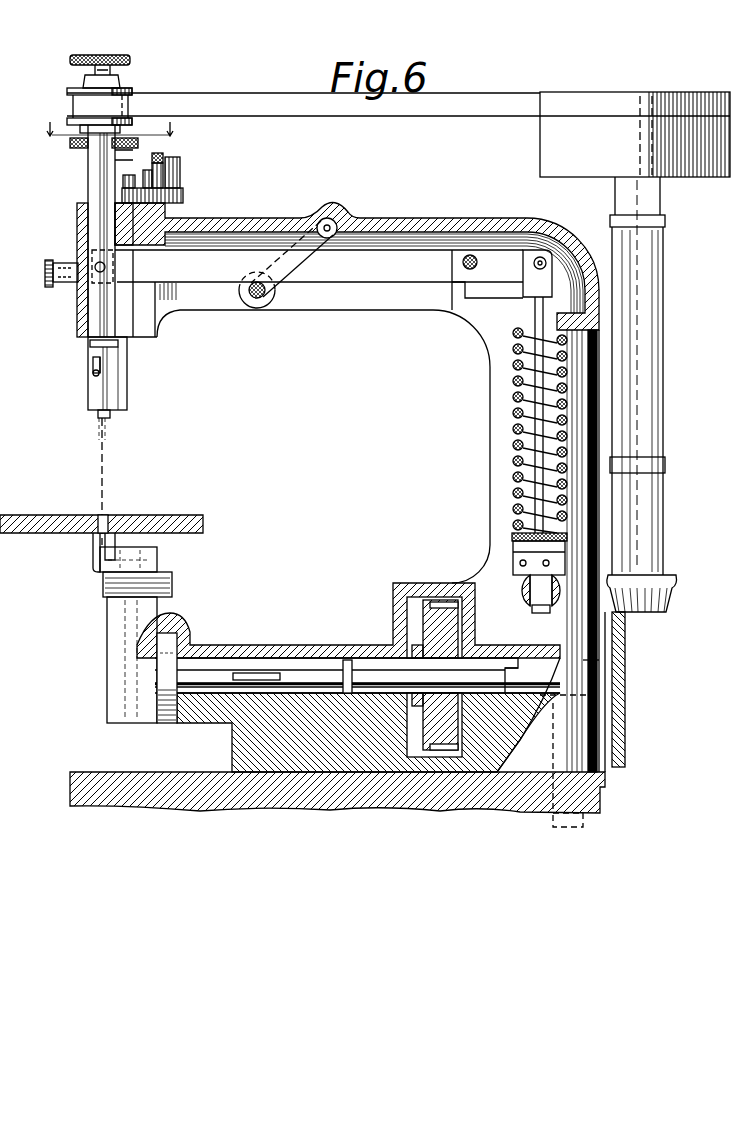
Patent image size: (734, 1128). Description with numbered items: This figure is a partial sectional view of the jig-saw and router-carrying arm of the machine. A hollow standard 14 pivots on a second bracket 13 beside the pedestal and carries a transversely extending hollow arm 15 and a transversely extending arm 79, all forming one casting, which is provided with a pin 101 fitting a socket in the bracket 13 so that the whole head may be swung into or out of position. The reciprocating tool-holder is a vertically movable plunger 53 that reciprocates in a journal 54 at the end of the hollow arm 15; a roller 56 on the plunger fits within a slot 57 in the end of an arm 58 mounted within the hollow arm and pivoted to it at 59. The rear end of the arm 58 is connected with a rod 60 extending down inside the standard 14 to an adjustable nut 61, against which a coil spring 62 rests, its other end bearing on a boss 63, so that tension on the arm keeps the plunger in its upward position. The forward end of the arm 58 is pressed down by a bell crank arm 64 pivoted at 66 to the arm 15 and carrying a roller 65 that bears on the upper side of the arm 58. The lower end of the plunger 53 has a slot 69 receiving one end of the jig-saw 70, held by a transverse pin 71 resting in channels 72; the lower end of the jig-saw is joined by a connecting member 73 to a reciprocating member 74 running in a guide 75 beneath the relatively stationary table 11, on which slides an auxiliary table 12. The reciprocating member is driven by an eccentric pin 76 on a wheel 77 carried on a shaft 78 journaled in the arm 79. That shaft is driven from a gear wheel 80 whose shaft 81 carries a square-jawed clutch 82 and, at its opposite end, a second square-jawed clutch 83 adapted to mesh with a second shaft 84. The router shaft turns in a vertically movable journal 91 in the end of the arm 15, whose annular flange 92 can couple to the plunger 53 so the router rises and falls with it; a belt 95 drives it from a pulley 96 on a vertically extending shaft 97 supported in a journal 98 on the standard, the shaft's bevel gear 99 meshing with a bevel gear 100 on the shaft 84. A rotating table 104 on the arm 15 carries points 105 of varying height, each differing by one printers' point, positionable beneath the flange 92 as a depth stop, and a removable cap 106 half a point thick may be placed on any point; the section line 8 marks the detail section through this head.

The section line 8— 8 is at (109, 129).
The relatively stationary table 11 is at (186, 533).
The auxiliary table 12 is at (26, 535).
The second bracket 13 is at (316, 782).
The hollow standard 14 is at (492, 438).
The hollow arm 15 is at (313, 296).
The plunger 53 is at (98, 178).
The journal 54 is at (80, 322).
The roller 56 is at (74, 290).
The slot 57 is at (92, 257).
The arm 58 is at (364, 270).
The pivot 59 is at (470, 270).
The rod 60 is at (553, 292).
The adjustable nut 61 is at (521, 572).
The coil spring 62 is at (512, 507).
The boss 63 is at (495, 312).
The arm 64 is at (292, 236).
The roller 65 is at (334, 222).
The pivot 66 is at (257, 300).
The slot 69 is at (95, 374).
The jig-saw 70 is at (99, 438).
The transverse pin 71 is at (92, 362).
The channels 72 is at (118, 345).
The connecting member 73 is at (95, 545).
The reciprocating member 74 is at (145, 607).
The guide 75 is at (127, 623).
The eccentric pin 76 is at (152, 642).
The wheel 77 is at (162, 688).
The shaft 78 is at (254, 668).
The transversely extending arm 79 is at (250, 733).
The gear wheel 80 is at (447, 722).
The shaft 81 is at (372, 668).
The square-jawed clutch 82 is at (346, 668).
The second square-jawed clutch 83 is at (521, 670).
The second shaft 84 is at (596, 672).
The journal 91 is at (124, 157).
The annular flange 92 is at (72, 143).
The belt 95 is at (303, 104).
The pulley 96 is at (548, 144).
The vertically extending shaft 97 is at (640, 368).
The journal 98 is at (660, 420).
The bevel gear 99 is at (668, 603).
The bevel gear 100 is at (628, 752).
The pin 101 is at (585, 801).
The rotating table 104 is at (184, 193).
The points 105 is at (183, 173).
The removable cap 106 is at (166, 160).